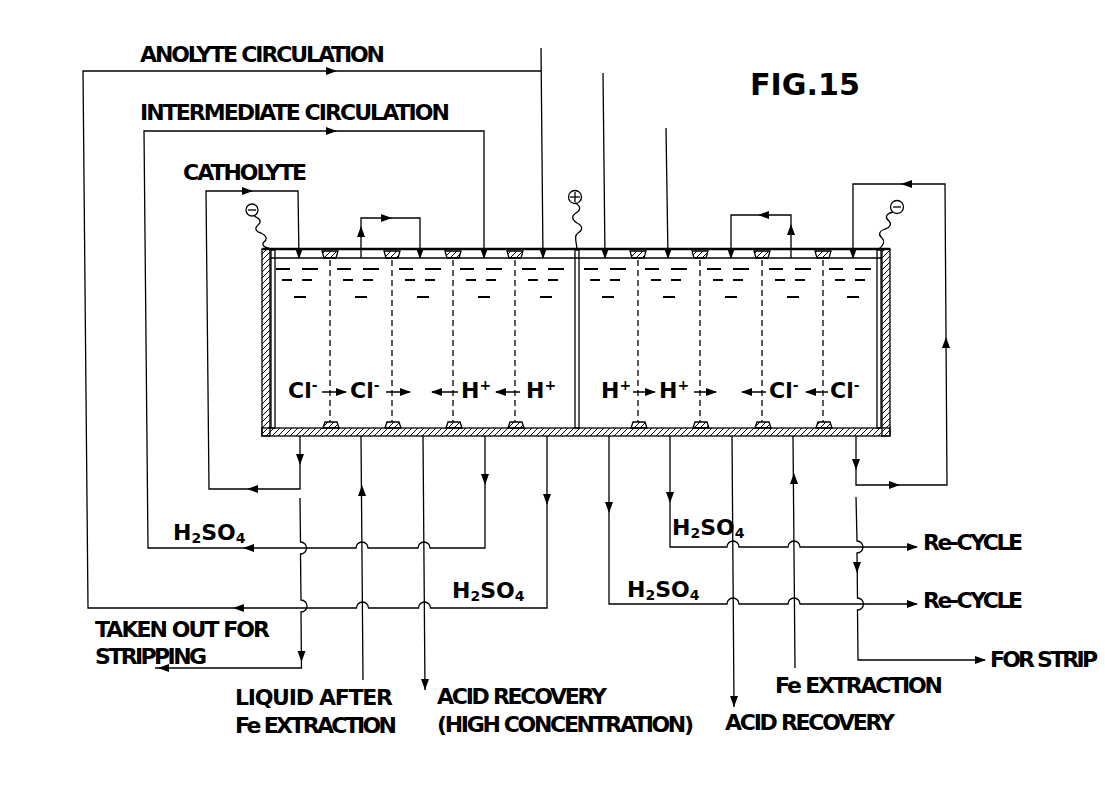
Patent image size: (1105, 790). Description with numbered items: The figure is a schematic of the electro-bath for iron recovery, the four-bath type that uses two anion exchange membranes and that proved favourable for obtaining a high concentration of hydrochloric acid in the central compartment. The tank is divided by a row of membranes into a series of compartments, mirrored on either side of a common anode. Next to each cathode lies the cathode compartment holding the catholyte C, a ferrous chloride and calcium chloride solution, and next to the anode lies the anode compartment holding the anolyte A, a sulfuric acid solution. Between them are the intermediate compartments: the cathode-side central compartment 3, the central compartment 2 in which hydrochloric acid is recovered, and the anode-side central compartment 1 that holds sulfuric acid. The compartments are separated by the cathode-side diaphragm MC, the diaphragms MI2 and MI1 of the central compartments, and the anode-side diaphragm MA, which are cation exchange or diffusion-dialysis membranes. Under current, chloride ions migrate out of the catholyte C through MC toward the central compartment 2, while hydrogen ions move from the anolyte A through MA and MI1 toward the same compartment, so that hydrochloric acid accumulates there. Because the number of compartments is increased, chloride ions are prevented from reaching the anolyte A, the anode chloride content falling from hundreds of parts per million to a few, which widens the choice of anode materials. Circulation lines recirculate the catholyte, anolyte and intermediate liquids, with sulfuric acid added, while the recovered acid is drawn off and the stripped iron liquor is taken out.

The catholyte C is at (573, 319).
The anolyte A is at (574, 319).
The central compartment (anode side) I1 1 is at (573, 320).
The central compartment (recovered) I2 2 is at (574, 320).
The central compartment I3 3 is at (574, 320).
The anode-side diaphragm MA is at (577, 339).
The cathode-side diaphragm MC is at (577, 339).
The central compartment 1 diaphragm MI1 is at (577, 339).
The central compartment 2 diaphragm MI2 is at (577, 339).